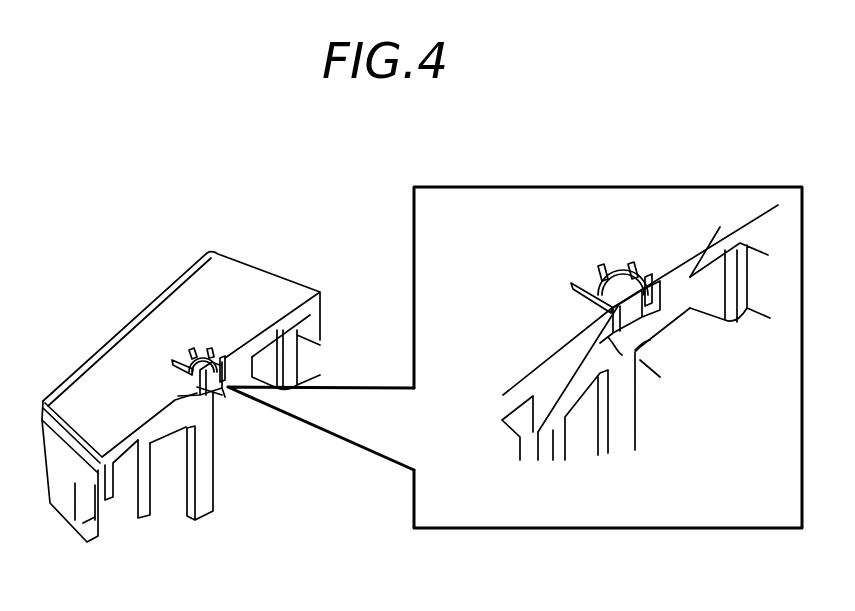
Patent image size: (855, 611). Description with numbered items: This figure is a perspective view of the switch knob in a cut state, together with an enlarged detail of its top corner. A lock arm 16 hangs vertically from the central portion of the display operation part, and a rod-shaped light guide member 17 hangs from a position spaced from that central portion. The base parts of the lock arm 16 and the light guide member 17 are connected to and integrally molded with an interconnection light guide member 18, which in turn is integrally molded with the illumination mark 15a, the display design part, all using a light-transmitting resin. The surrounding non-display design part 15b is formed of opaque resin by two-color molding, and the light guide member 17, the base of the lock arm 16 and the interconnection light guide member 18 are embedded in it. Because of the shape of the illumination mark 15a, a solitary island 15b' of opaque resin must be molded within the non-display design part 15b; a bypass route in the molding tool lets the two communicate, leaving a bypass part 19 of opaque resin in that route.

The illumination mark 15a is at (190, 348).
The non-display design part 15b is at (410, 373).
The solitary island 15b' is at (450, 296).
The lock arm 16 is at (213, 467).
The light guide member 17 is at (140, 503).
The interconnection light guide member 18 is at (178, 396).
The bypass part 19 is at (225, 397).